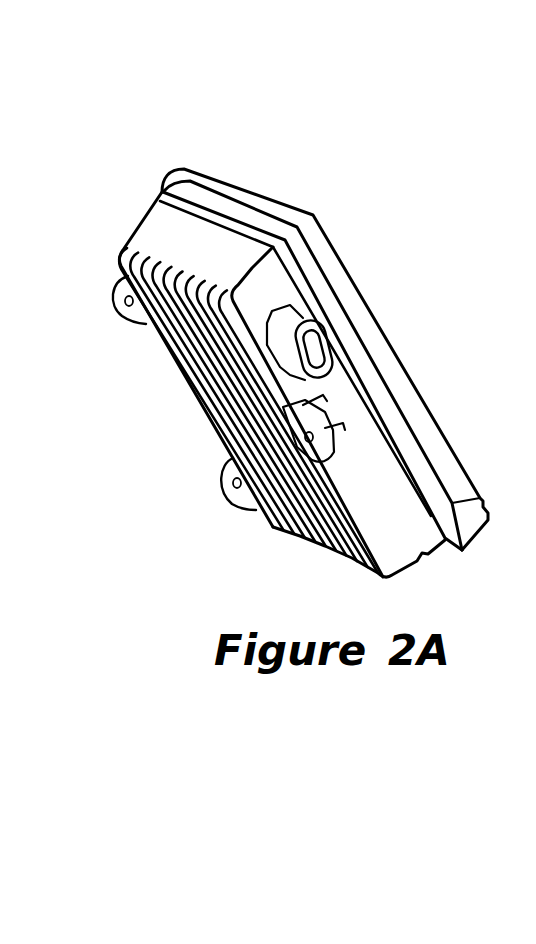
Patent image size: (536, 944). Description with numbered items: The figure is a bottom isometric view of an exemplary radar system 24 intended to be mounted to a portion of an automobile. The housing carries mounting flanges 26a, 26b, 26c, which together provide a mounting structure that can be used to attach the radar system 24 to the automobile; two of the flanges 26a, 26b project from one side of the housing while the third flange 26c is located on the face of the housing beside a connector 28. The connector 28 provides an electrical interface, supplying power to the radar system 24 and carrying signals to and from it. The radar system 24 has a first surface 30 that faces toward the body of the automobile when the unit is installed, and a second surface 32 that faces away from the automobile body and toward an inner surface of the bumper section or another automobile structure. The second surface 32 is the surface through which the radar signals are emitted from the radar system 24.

The radar system 24 is at (282, 302).
The mounting flange 26a is at (114, 296).
The mounting flange 26b is at (226, 485).
The mounting flange 26c is at (337, 437).
The connector 28 is at (316, 347).
The first surface 30 is at (220, 415).
The second surface 32 is at (343, 266).